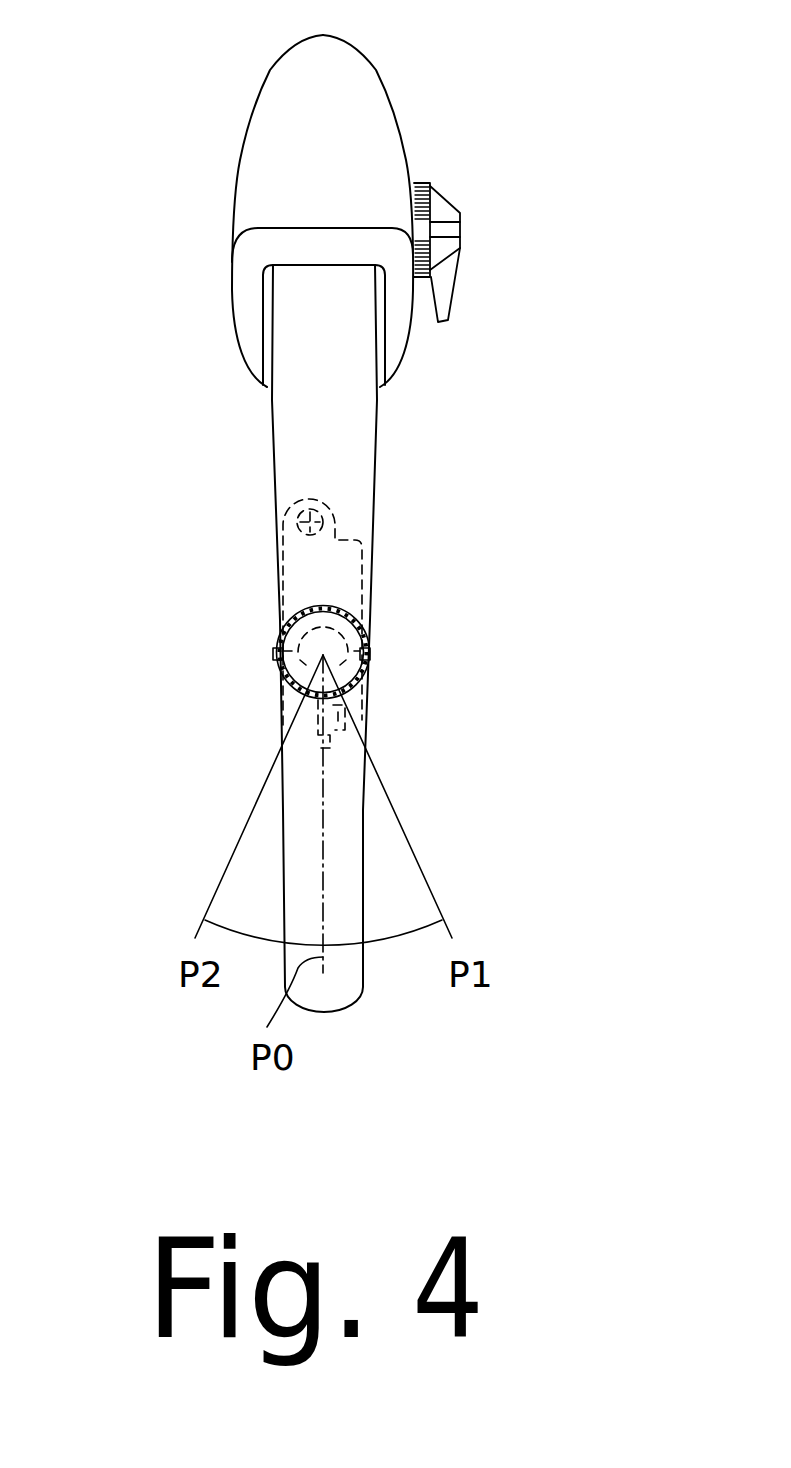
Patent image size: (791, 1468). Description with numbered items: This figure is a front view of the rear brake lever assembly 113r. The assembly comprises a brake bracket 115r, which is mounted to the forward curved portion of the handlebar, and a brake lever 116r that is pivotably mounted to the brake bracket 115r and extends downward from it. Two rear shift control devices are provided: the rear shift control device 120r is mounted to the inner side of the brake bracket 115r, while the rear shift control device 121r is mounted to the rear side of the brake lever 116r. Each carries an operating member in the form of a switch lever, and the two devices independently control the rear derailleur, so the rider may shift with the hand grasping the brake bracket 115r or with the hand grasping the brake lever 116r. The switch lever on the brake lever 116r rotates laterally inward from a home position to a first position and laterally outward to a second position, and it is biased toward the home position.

The brake bracket 115r is at (240, 180).
The rear shift control device 120r is at (459, 178).
The brake lever 116r is at (283, 483).
The brake lever assembly 113r is at (248, 595).
The rear shift control device 121r is at (383, 662).